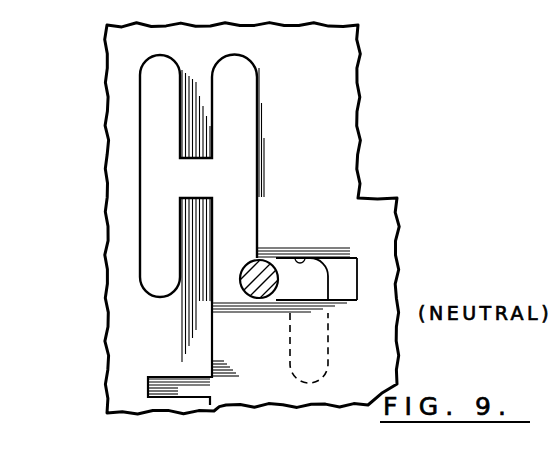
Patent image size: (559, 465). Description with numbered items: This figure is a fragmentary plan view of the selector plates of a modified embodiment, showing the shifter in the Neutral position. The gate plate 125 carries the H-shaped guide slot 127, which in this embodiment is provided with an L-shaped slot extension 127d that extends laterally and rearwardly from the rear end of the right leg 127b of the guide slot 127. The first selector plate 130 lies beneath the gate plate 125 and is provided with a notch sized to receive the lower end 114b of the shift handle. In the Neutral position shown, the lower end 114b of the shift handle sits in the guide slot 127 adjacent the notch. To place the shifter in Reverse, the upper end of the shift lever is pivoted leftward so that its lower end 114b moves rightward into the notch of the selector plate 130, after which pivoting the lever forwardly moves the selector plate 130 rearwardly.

The gate plate 125 is at (125, 362).
The H-shaped guide slot 127 is at (163, 180).
The right leg of the guide slot 127b is at (229, 207).
The L-shaped slot extension 127d is at (312, 282).
The lower end of the shift handle 114b is at (240, 272).
The first selector plate 130 is at (247, 378).